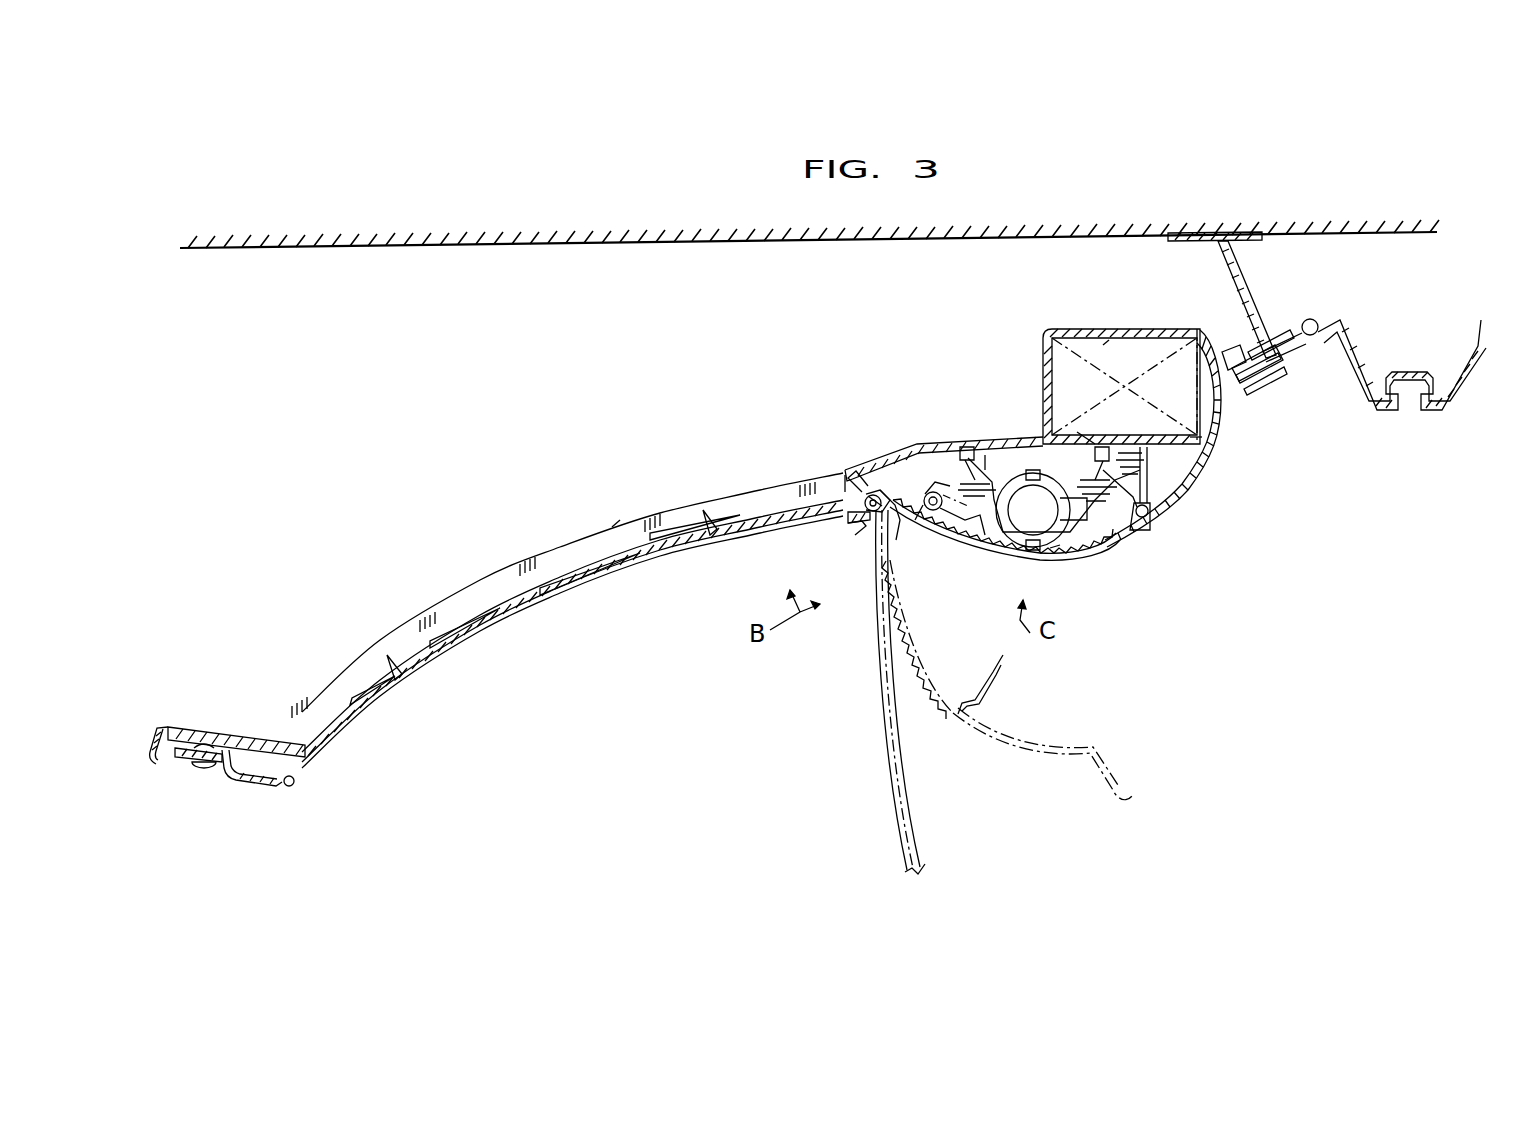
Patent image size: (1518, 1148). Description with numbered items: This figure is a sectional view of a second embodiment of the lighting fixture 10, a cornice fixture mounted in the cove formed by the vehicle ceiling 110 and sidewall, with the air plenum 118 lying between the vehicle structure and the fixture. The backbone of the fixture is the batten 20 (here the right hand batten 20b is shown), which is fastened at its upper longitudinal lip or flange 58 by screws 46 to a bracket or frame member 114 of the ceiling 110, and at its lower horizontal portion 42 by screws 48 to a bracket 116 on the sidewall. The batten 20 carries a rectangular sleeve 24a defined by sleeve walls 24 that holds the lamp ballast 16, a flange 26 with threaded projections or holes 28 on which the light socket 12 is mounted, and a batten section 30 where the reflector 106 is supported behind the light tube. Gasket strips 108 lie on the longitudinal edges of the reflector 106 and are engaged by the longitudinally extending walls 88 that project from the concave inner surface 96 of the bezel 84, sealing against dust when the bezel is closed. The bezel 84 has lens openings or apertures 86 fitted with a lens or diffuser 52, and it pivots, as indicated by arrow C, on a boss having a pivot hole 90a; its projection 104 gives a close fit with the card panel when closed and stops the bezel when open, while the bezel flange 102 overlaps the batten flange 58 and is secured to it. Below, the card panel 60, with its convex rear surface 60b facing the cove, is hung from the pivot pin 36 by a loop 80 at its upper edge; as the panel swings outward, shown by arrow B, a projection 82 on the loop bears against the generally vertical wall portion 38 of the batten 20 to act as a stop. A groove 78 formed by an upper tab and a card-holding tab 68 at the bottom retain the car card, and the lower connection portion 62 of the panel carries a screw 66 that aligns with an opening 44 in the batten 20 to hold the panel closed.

The vehicle ceiling 110 is at (761, 244).
The air plenum 118 is at (606, 394).
The bracket or frame member 114 is at (1251, 290).
The bezel flange 102 is at (1277, 360).
The screws 46 is at (1262, 345).
The longitudinal lip or flange 58 is at (1222, 352).
The sleeve walls 24 is at (1052, 368).
The rectangular sleeve 24a is at (1106, 345).
The batten section 30 is at (1077, 432).
The lamp ballast 16 is at (1215, 352).
The flange 26 is at (1178, 486).
The concave inner surface of bezel 96 is at (1212, 432).
The bezel 84 is at (1206, 476).
The lens openings or apertures 86 is at (1138, 530).
The longitudinally extending walls 88 is at (965, 447).
The reflector 106 is at (1002, 432).
The gasket strips 108 is at (967, 448).
The threaded projections or holes 28 is at (1033, 473).
The pivot hole 90a is at (935, 512).
The pivot pin 36 is at (843, 478).
The loop 80 is at (864, 480).
The projection 82 is at (868, 495).
The projection 104 is at (882, 490).
The vertical wall portion 38 is at (848, 520).
The groove 78 is at (856, 530).
The lens or diffuser 52 is at (1098, 528).
The light socket 12 is at (1058, 548).
The card panel 60 is at (873, 760).
The batten 20 is at (400, 626).
The convex rear surface 60b is at (510, 608).
The right hand batten 20b is at (616, 526).
The lighting fixture 10 is at (518, 524).
The lower horizontal portion 42 is at (180, 735).
The bracket 116 is at (155, 728).
The lower connection portion 62 is at (258, 790).
The card-holding tab 68 is at (295, 783).
The opening 44 is at (222, 757).
The screws 48 is at (192, 768).
The screw 66 is at (206, 772).